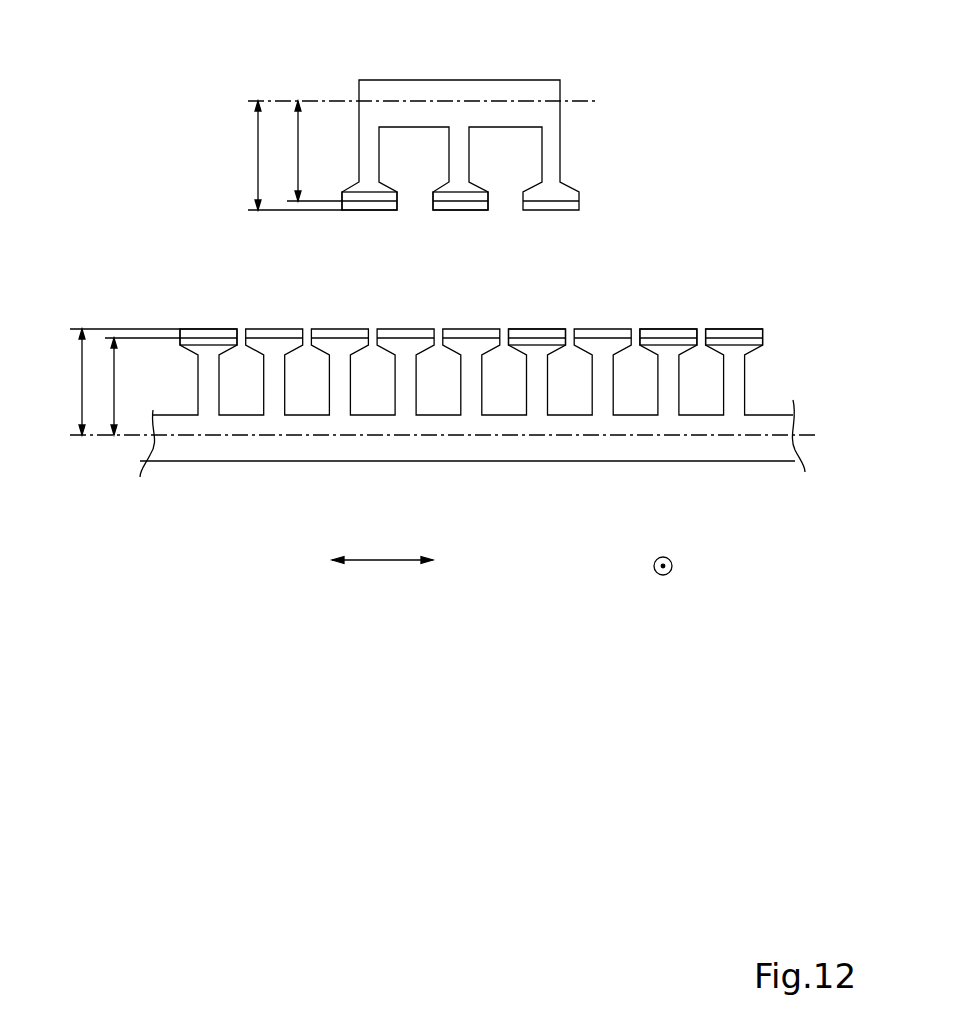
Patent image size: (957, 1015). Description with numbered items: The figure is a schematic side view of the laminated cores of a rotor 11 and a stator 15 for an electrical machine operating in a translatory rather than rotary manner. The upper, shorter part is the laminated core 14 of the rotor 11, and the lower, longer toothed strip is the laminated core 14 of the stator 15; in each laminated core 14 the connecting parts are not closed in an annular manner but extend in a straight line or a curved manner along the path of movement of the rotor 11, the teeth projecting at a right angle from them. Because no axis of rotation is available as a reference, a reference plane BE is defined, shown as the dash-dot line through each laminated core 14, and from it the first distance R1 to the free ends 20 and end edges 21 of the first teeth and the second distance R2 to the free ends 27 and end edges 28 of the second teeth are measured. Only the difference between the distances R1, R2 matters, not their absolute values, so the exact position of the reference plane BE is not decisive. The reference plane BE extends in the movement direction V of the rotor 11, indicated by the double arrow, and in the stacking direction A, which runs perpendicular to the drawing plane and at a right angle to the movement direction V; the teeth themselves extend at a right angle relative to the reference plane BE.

The rotor 11 is at (328, 88).
The laminated core 14 is at (583, 145).
The stator 15 is at (263, 476).
The free end 20 is at (471, 268).
The end edge 21 is at (220, 329).
The free end 27 is at (565, 268).
The end edge 28 is at (470, 212).
The reference plane BE is at (479, 100).
The first distance R1 is at (196, 268).
The second distance R2 is at (212, 268).
The movement direction V is at (375, 560).
The stacking direction A is at (670, 573).